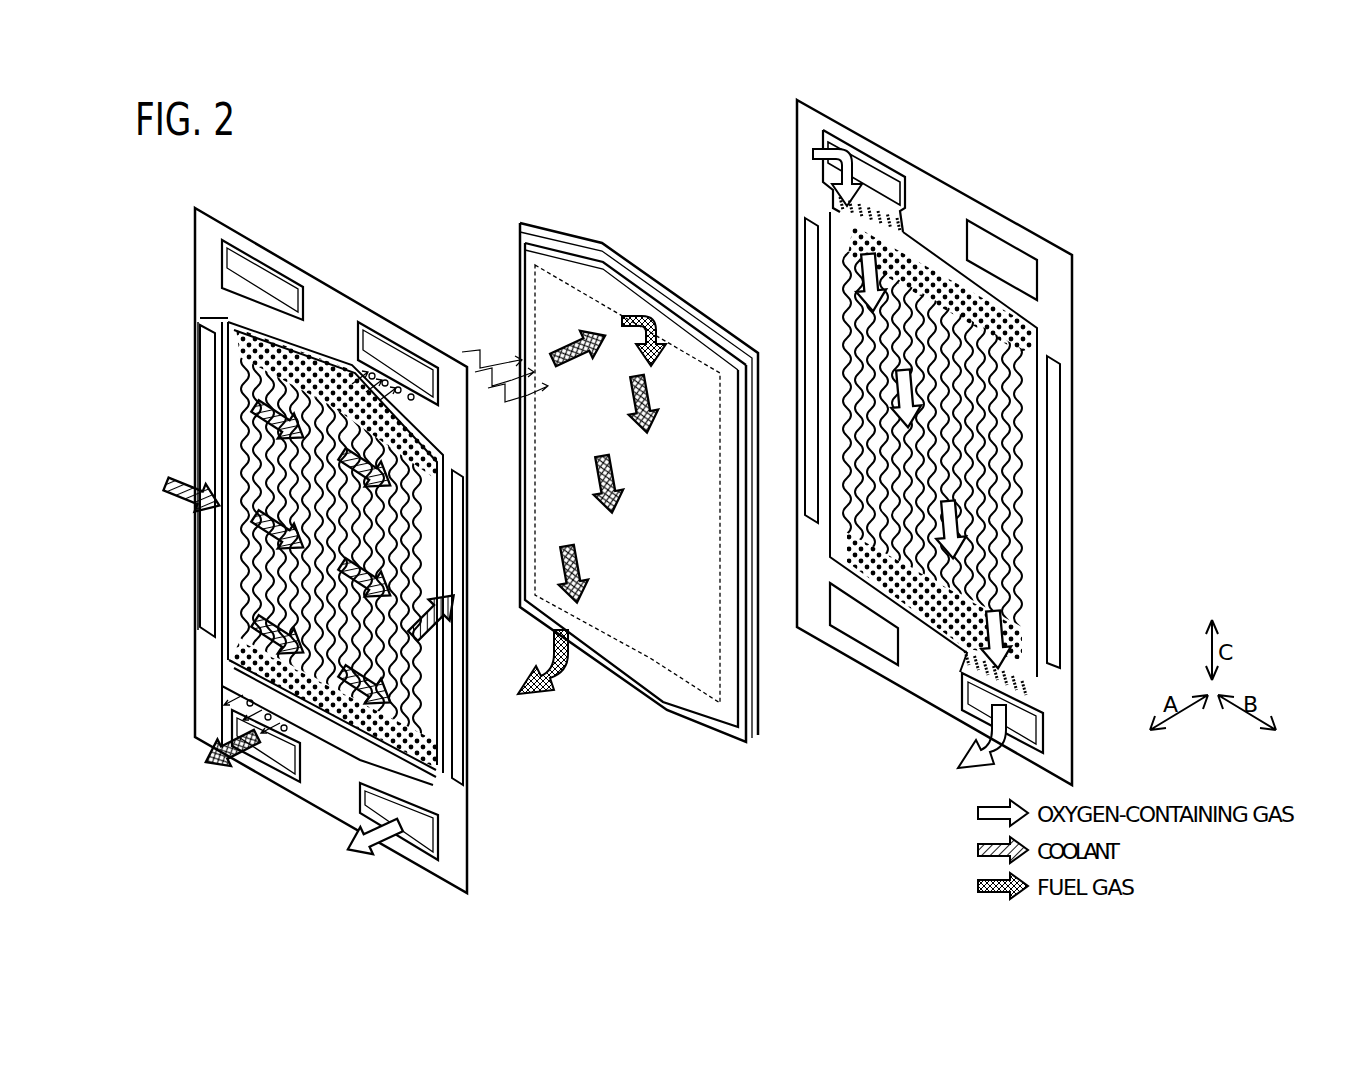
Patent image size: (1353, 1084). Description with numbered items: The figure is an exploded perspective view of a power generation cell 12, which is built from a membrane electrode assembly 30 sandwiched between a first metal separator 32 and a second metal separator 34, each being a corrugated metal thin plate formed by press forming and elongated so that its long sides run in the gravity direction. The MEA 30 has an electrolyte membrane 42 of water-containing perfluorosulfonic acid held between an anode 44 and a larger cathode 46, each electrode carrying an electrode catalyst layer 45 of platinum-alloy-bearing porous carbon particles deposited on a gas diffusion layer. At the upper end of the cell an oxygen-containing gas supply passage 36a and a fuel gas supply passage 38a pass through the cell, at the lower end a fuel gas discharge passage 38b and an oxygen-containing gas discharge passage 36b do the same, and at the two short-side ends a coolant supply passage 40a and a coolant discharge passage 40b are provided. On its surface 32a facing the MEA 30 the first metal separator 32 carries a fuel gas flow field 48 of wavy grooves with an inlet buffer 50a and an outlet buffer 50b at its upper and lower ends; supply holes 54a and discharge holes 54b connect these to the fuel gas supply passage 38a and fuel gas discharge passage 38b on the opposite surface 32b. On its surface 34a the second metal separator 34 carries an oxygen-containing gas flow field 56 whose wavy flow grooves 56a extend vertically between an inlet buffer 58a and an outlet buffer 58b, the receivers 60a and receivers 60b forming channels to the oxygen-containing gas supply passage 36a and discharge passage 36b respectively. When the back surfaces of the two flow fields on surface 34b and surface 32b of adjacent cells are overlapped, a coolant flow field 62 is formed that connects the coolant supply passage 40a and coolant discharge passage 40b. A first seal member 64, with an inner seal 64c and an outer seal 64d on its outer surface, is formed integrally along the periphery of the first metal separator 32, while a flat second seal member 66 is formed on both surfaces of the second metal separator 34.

The power generation cell 12 is at (376, 159).
The membrane electrode assembly 30 is at (508, 231).
The first metal separator 32 is at (180, 211).
The surface of first metal separator 32a is at (232, 560).
The surface of first metal separator 32b is at (232, 600).
The second metal separator 34 is at (785, 110).
The surface of second metal separator 34a is at (1022, 522).
The surface of second metal separator 34b is at (1022, 577).
The oxygen-containing gas supply passage 36a is at (255, 283).
The oxygen-containing gas discharge passage 36b is at (425, 828).
The fuel gas supply passage 38a is at (378, 338).
The fuel gas discharge passage 38b is at (236, 726).
The coolant supply passage 40a is at (208, 522).
The coolant discharge passage 40b is at (453, 745).
The electrolyte membrane 42 is at (580, 250).
The anode 44 is at (678, 337).
The electrode catalyst layer 45 is at (550, 303).
The cathode 46 is at (545, 226).
The fuel gas flow field 48 is at (265, 450).
The inlet buffer 50a is at (320, 380).
The outlet buffer 50b is at (332, 715).
The supply holes 54a is at (402, 385).
The discharge holes 54b is at (238, 700).
The oxygen-containing gas flow field 56 is at (1014, 425).
The wavy flow grooves 56a is at (870, 318).
The inlet buffer 58a is at (866, 249).
The outlet buffer 58b is at (953, 635).
The receivers 60a is at (842, 201).
The receivers 60b is at (1028, 685).
The coolant flow field 62 is at (265, 432).
The first seal member 64 is at (455, 870).
The inner seal 64c is at (228, 322).
The outer seal 64d is at (196, 342).
The second seal member 66 is at (815, 641).